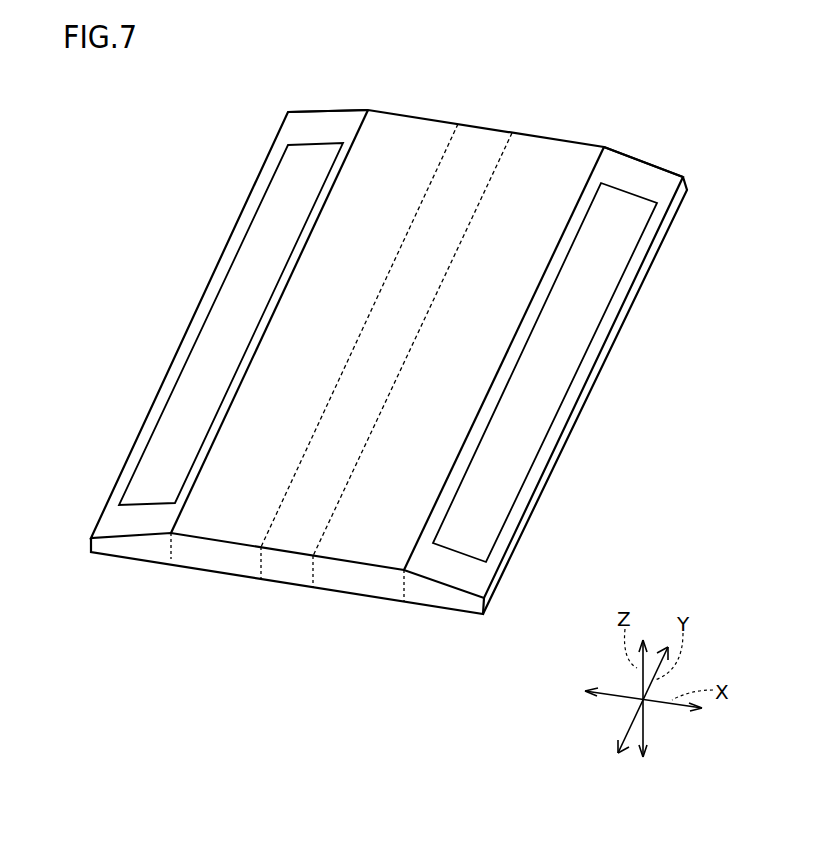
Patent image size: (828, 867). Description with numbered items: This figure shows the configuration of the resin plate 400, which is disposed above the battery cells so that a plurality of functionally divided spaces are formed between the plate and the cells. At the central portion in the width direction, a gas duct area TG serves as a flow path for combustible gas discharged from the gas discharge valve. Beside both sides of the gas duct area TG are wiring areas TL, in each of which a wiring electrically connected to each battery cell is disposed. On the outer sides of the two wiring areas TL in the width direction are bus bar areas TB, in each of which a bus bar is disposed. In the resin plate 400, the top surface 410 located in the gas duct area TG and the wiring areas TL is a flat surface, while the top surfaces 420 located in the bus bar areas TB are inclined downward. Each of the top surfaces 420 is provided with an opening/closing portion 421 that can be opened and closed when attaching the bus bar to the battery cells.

The resin plate 400 is at (225, 566).
The top surface 410 is at (528, 163).
The top surfaces 420 is at (247, 293).
The opening/closing portion 421 is at (178, 392).
The bus bar areas TB is at (330, 105).
The wiring areas TL is at (422, 113).
The gas duct area TG is at (490, 122).